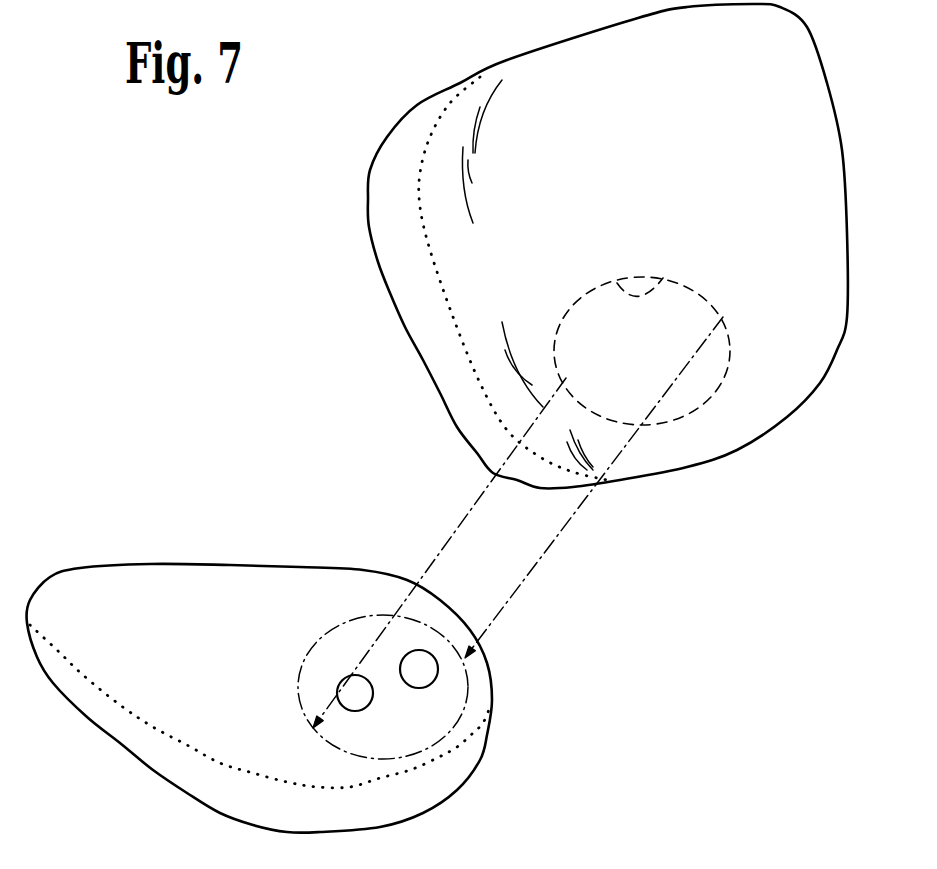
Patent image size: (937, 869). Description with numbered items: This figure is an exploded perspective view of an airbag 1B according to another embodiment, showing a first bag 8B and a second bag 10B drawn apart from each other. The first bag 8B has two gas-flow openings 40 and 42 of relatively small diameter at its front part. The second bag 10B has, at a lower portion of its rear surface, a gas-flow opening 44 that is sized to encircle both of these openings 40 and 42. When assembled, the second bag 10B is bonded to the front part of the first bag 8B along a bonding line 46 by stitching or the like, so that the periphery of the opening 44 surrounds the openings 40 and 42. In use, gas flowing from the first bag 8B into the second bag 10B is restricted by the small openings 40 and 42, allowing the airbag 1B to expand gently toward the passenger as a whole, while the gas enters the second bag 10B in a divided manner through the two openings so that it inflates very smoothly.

The airbag 1B is at (290, 303).
The second bag 10B is at (737, 448).
The first bag 8B is at (494, 755).
The gas-flow opening 44 is at (665, 278).
The bonding line 46 is at (308, 652).
The gas-flow opening 40 is at (373, 702).
The gas-flow opening 42 is at (425, 680).